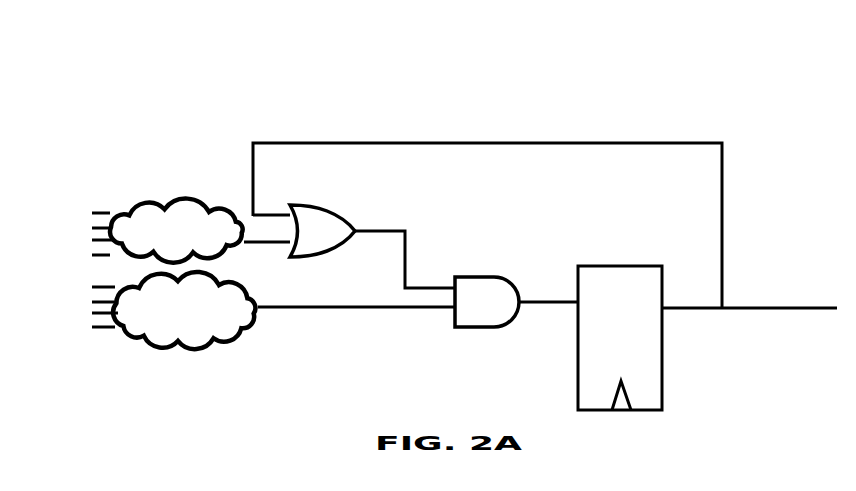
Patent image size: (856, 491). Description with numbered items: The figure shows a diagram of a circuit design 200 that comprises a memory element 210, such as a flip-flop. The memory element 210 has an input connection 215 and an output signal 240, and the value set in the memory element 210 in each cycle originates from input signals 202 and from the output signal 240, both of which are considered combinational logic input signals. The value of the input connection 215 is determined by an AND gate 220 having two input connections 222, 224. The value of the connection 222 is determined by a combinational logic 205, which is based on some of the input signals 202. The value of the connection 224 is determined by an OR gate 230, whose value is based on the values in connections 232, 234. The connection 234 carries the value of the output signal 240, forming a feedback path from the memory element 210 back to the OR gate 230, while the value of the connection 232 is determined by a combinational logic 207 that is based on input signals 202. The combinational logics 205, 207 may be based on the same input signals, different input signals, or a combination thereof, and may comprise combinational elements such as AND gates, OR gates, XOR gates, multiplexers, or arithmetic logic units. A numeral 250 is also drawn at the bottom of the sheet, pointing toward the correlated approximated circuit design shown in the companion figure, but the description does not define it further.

The circuit design 200 is at (103, 84).
The input signals 202 is at (76, 211).
The combinational logic 205 is at (207, 350).
The combinational logic 207 is at (195, 180).
The memory element 210 is at (636, 248).
The input connection 215 is at (552, 280).
The AND gate 220 is at (488, 256).
The input connection 222 is at (415, 310).
The input connection 224 is at (422, 285).
The OR gate 230 is at (350, 188).
The connection 232 is at (265, 243).
The connection 234 is at (290, 193).
The output signal 240 is at (678, 307).
The circuit of FIG. 2B 250 is at (157, 490).